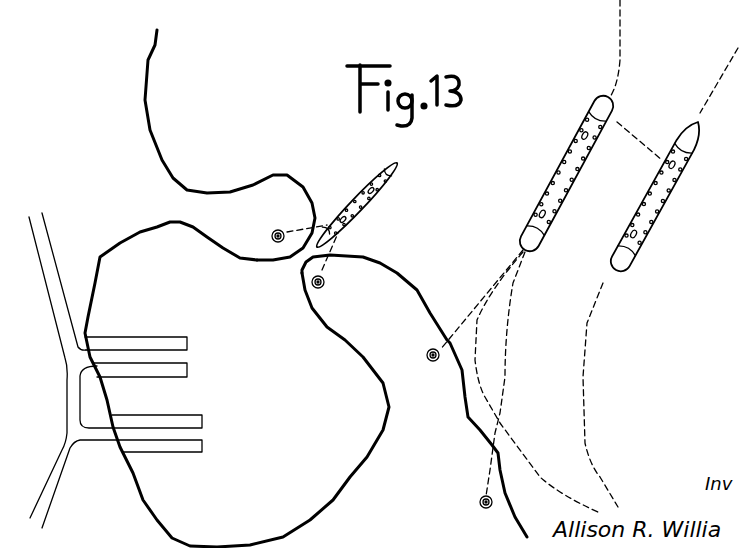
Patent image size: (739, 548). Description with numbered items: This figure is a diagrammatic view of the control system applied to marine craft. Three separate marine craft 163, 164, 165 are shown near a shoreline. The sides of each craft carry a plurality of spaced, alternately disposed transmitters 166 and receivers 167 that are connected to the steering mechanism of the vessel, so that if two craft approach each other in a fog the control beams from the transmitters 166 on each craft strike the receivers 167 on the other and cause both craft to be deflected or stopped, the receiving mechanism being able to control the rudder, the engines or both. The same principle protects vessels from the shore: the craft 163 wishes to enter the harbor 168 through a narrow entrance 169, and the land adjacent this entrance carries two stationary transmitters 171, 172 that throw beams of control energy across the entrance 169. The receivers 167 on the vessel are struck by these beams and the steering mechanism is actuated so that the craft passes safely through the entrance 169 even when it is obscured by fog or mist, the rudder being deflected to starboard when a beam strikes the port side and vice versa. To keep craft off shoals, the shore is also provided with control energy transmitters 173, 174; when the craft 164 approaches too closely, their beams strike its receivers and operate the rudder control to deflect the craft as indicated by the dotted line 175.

The marine craft 163 is at (395, 166).
The marine craft 164 is at (598, 107).
The marine craft 165 is at (688, 148).
The transmitters 166 is at (347, 223).
The receivers 167 is at (342, 232).
The harbor 168 is at (306, 384).
The narrow entrance 169 is at (298, 257).
The stationary transmitter 171 is at (278, 229).
The stationary transmitter 172 is at (325, 286).
The control energy transmitter 173 is at (432, 362).
The control energy transmitter 174 is at (484, 509).
The dotted line 175 is at (508, 437).